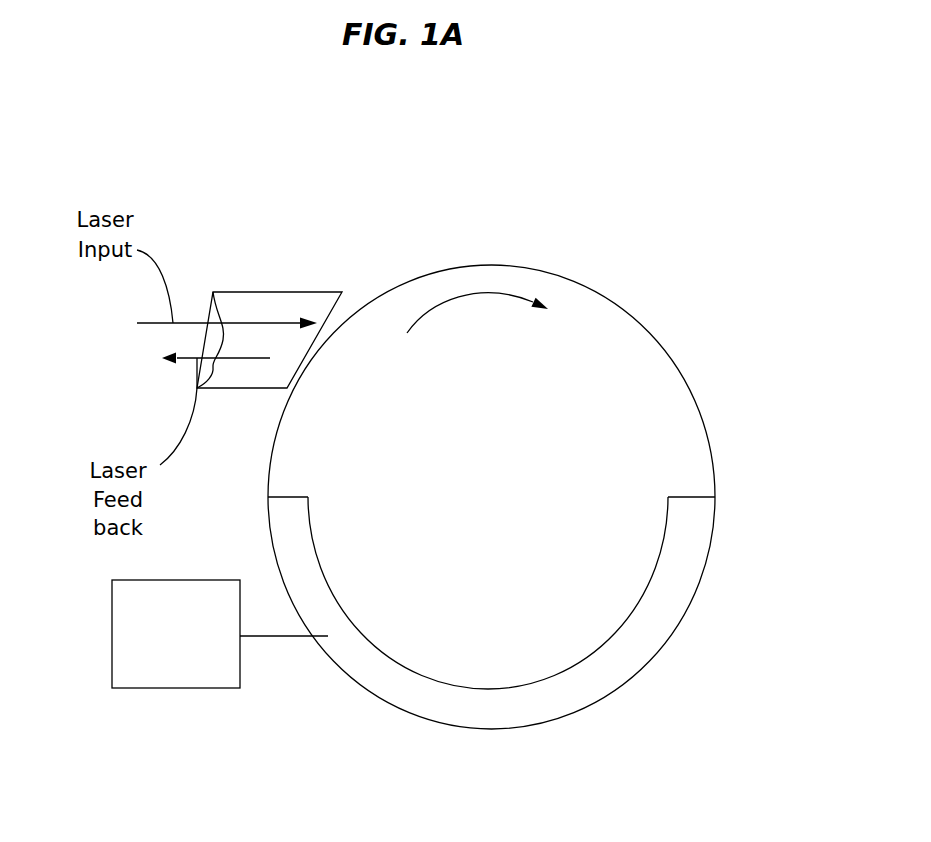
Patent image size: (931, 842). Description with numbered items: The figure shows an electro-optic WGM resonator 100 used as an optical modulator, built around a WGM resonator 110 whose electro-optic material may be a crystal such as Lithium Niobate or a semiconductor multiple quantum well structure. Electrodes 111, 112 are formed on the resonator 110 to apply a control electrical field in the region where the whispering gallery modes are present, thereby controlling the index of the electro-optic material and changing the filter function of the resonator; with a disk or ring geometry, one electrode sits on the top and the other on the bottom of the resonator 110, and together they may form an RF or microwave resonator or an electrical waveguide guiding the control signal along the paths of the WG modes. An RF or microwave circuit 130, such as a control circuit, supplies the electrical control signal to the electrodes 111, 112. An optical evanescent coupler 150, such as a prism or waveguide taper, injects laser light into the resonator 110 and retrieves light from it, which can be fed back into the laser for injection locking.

The electro-optic WGM resonator 100 is at (555, 211).
The WGM resonator 110 is at (461, 531).
The electrode 111 is at (523, 593).
The electrode 112 is at (698, 543).
The RF or microwave circuit 130 is at (177, 688).
The optical evanescent coupler 150 is at (300, 290).